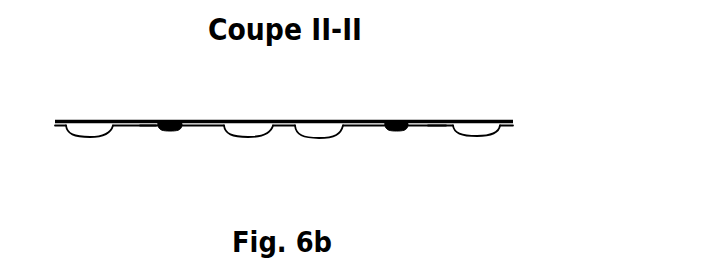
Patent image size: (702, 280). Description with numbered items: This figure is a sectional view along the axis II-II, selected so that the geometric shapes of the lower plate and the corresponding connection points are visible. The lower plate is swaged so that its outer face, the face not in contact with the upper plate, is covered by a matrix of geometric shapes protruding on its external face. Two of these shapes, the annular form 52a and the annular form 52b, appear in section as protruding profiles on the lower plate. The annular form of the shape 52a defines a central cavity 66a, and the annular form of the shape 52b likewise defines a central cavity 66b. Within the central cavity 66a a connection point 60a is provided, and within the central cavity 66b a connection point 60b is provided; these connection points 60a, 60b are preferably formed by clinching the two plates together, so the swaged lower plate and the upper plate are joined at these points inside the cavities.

The annular geometric shape 52a is at (233, 137).
The annular geometric shape 52b is at (465, 136).
The connection point 60a is at (173, 120).
The connection point 60b is at (399, 120).
The central cavity 66a is at (151, 126).
The central cavity 66b is at (433, 126).